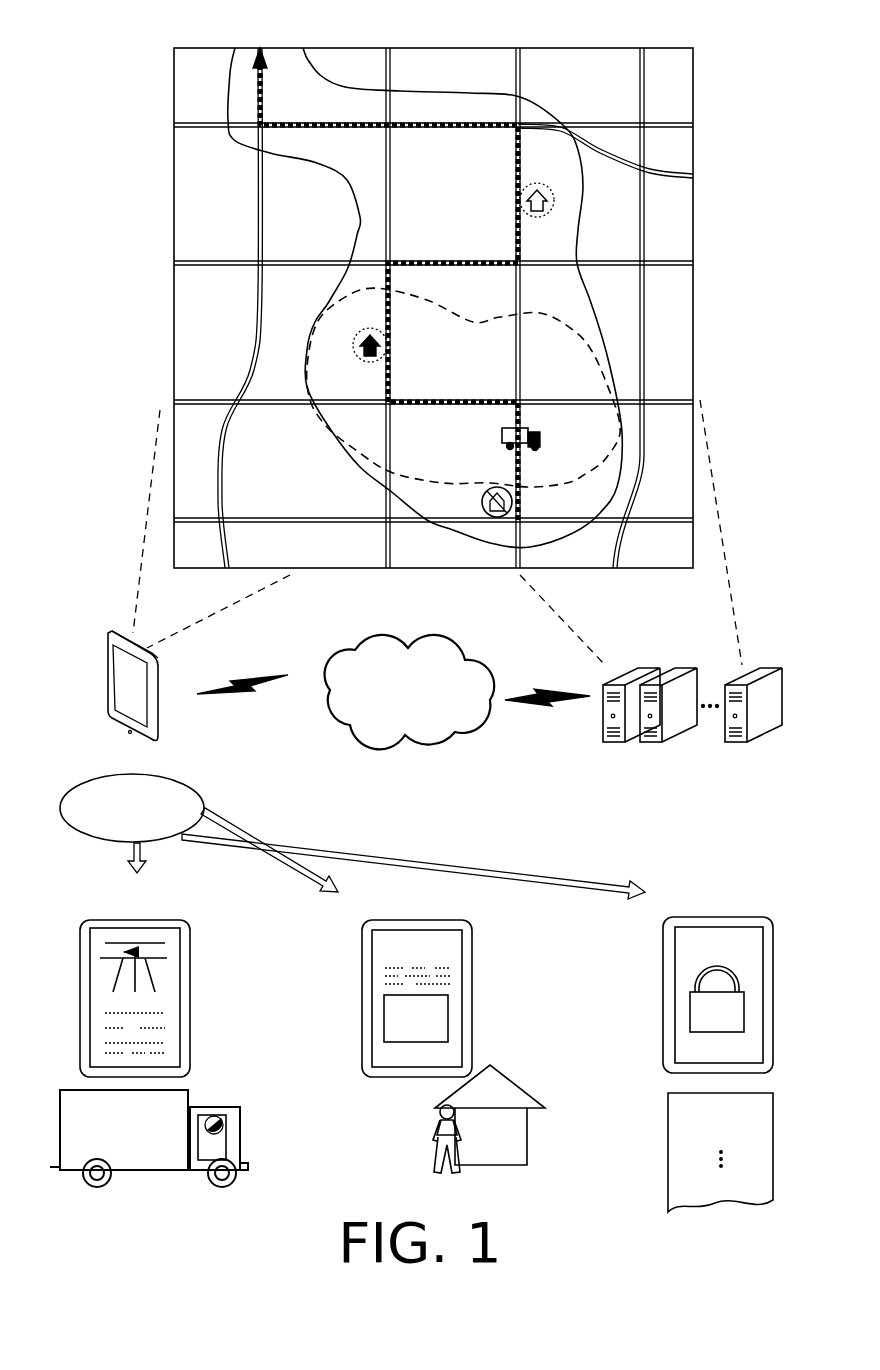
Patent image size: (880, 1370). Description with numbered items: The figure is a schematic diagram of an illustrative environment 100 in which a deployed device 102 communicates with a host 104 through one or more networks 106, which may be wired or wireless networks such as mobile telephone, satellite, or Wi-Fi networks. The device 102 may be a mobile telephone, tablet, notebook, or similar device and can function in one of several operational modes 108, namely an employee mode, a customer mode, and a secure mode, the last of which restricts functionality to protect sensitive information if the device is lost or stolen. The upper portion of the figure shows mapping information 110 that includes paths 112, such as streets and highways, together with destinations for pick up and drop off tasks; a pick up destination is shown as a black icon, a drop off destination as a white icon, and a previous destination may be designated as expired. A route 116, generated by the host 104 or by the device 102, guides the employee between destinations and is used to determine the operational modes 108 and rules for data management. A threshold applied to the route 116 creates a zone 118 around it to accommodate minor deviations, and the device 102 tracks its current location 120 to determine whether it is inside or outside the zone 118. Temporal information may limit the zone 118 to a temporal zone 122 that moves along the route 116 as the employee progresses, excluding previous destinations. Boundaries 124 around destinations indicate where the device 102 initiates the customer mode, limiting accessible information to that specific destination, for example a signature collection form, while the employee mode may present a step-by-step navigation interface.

The environment 100 is at (106, 36).
The deployed device 102 is at (135, 698).
The host 104 is at (692, 722).
The networks 106 is at (410, 692).
The operational modes 108 is at (352, 836).
The mapping information 110 is at (436, 300).
The paths 112 is at (256, 199).
The route 116 is at (524, 472).
The zone 118 is at (585, 289).
The current location 120 is at (547, 434).
The temporal zone 122 is at (600, 349).
The boundaries 124 is at (515, 214).